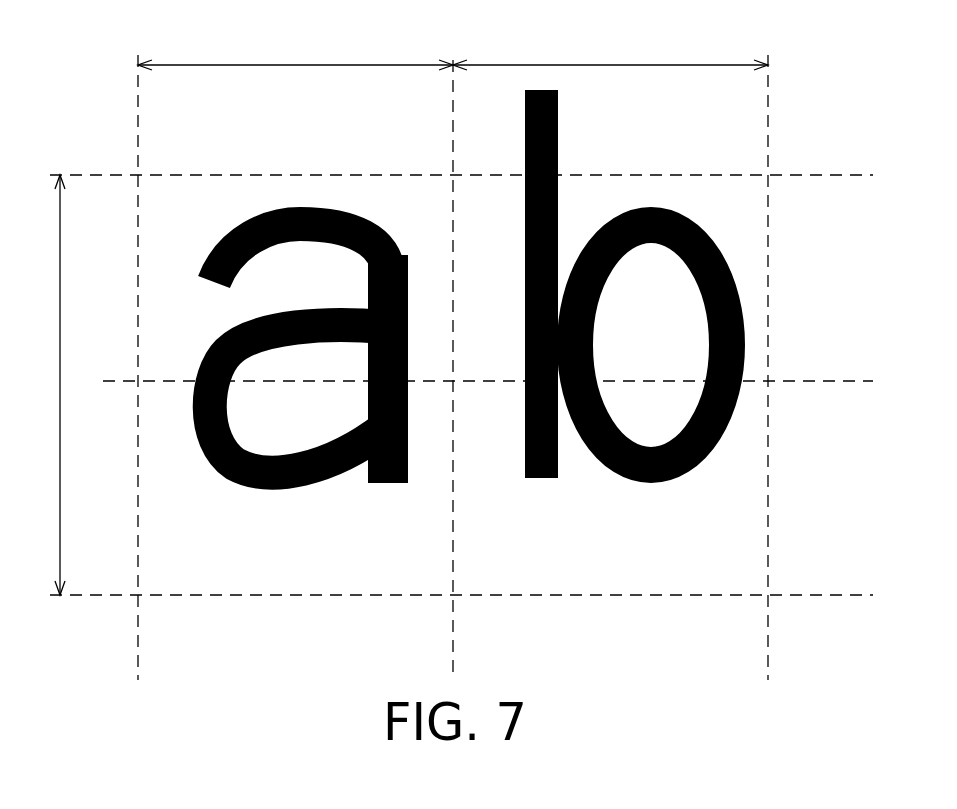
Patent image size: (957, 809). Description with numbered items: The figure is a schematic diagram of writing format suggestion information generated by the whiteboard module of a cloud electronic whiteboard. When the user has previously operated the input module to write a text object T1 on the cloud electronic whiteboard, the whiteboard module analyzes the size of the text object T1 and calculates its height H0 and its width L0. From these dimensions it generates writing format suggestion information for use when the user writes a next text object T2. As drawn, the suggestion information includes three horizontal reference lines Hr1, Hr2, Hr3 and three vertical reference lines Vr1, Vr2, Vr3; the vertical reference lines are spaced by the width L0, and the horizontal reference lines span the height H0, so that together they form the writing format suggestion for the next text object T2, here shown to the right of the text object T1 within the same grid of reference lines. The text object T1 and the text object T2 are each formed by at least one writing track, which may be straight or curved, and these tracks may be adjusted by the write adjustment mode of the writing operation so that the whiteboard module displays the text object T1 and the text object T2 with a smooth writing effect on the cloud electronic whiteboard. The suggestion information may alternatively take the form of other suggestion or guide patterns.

The vertical reference line Vr1 is at (137, 102).
The vertical reference line Vr2 is at (452, 103).
The vertical reference line Vr3 is at (769, 105).
The horizontal reference line Hr1 is at (833, 175).
The horizontal reference line Hr2 is at (832, 381).
The horizontal reference line Hr3 is at (832, 595).
The width L0 is at (453, 51).
The height H0 is at (42, 385).
The text object T1 is at (306, 495).
The text object T2 is at (637, 493).